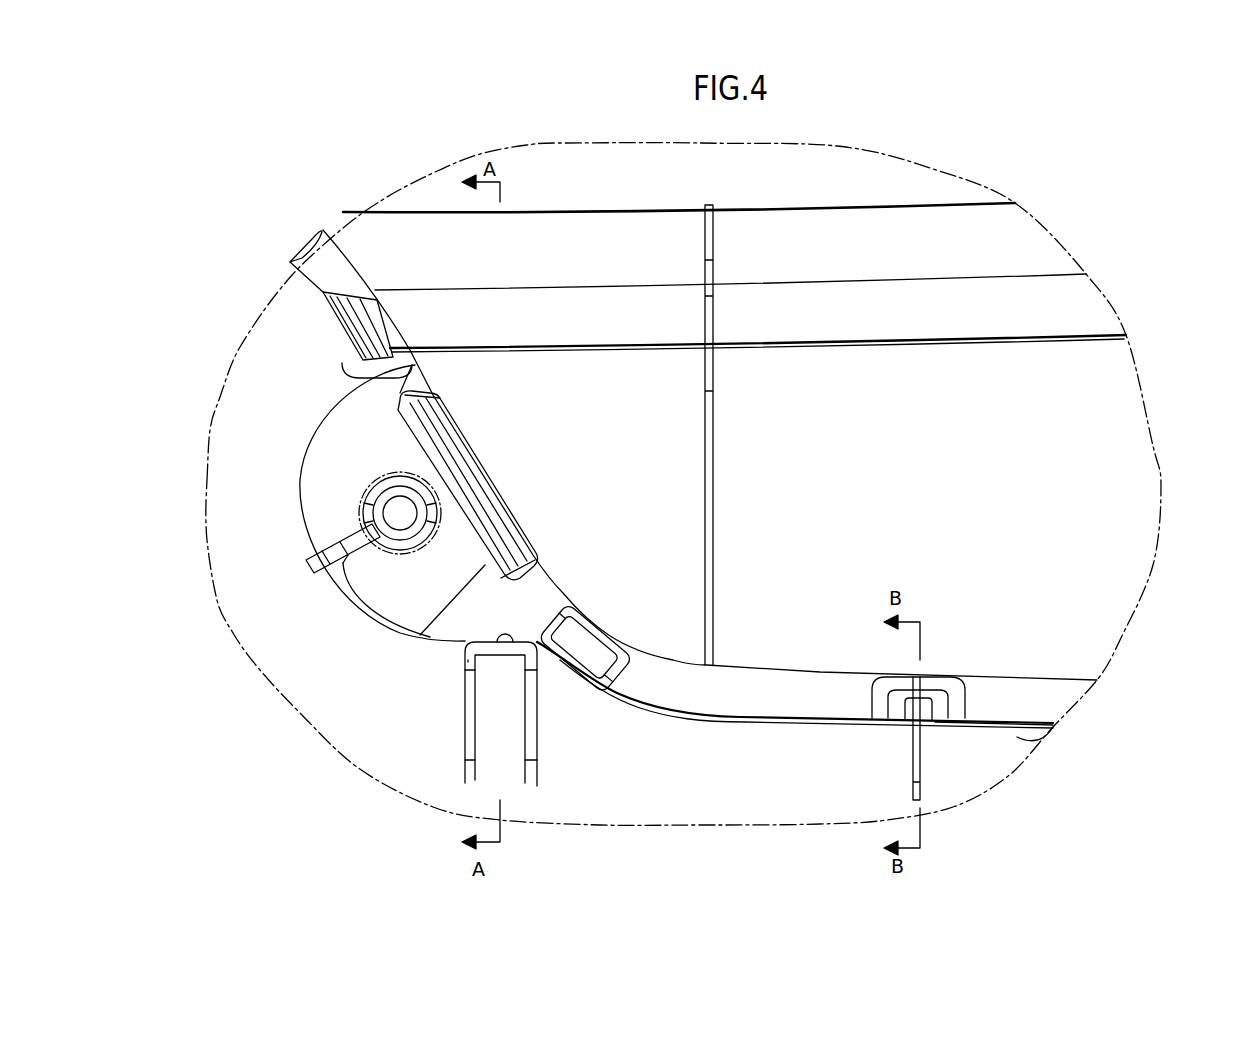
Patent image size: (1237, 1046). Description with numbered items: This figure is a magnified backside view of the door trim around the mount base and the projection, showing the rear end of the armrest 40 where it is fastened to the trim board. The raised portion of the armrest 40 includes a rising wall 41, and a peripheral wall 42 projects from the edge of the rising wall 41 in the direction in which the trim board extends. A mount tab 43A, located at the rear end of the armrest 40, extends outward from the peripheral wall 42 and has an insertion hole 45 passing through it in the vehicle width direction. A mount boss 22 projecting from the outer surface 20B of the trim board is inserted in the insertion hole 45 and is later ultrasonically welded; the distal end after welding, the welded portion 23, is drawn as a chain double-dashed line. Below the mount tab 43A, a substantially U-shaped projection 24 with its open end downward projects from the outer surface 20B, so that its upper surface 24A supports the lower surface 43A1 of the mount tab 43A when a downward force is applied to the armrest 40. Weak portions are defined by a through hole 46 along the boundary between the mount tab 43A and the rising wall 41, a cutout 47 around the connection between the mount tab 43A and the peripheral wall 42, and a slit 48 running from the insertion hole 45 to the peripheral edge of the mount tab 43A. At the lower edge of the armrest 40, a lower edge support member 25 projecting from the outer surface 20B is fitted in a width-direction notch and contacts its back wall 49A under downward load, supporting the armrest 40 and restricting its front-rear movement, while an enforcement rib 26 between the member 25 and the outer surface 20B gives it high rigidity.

The armrest 40 is at (1085, 425).
The rising wall 41 is at (540, 567).
The peripheral wall 42 is at (708, 690).
The mount tab 43A is at (398, 605).
The lower surface of the mount tab 43A1 is at (468, 660).
The insertion hole 45 is at (410, 521).
The through hole 46 is at (468, 636).
The cutout 47 is at (335, 293).
The slit 48 is at (350, 553).
The mount boss 22 is at (348, 585).
The welded portion 23 is at (382, 473).
The projection 24 is at (537, 670).
The upper surface of the projection 24A is at (505, 634).
The back wall of the notch 49A is at (898, 713).
The lower edge support member 25 is at (933, 723).
The enforcement rib 26 is at (922, 762).
The outer surface of the trim board 20B is at (1017, 737).